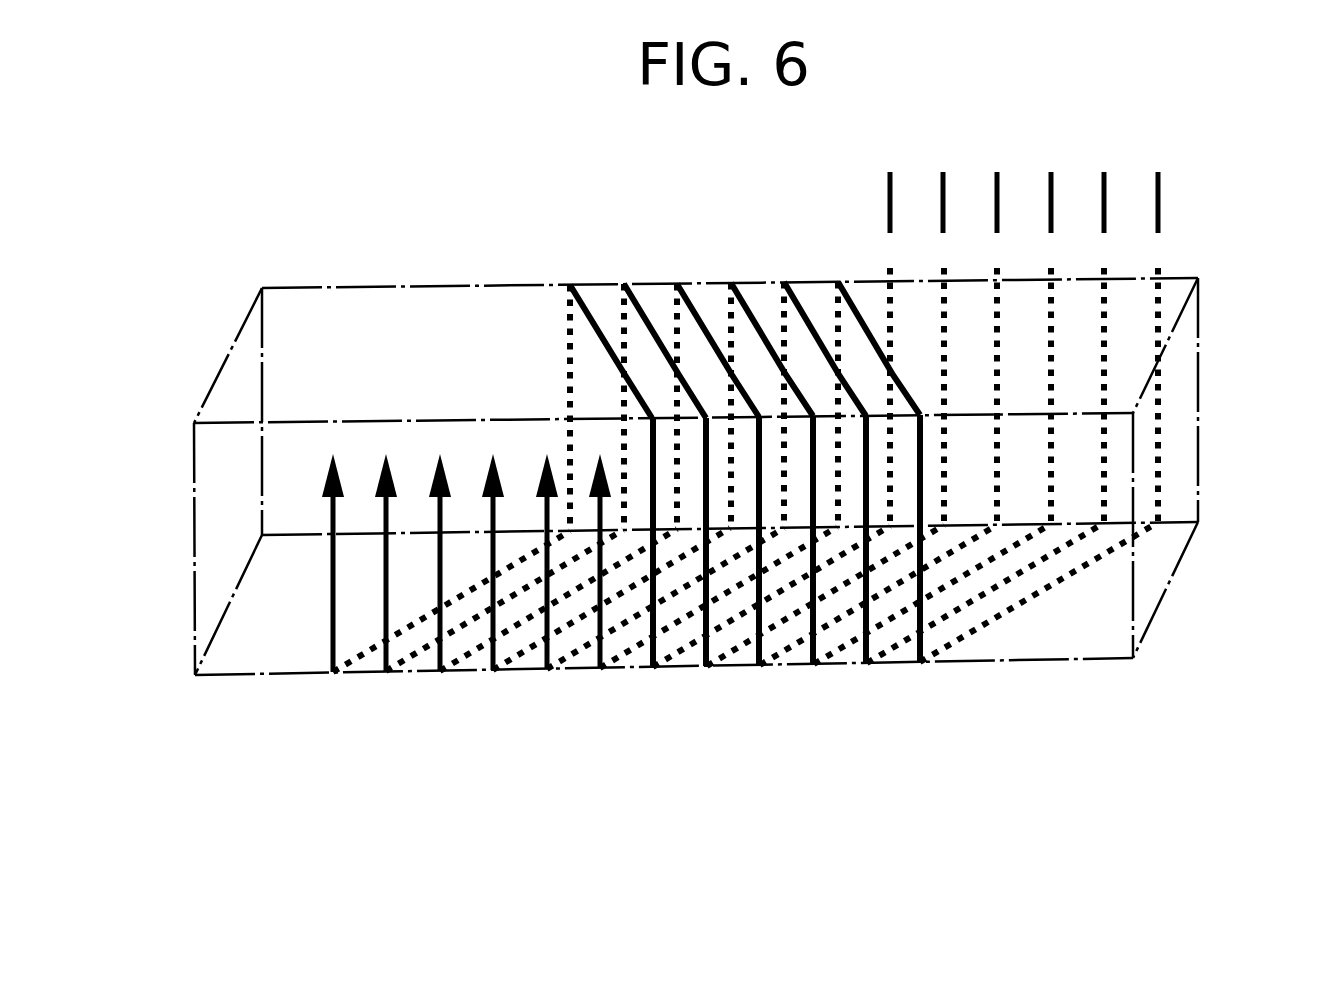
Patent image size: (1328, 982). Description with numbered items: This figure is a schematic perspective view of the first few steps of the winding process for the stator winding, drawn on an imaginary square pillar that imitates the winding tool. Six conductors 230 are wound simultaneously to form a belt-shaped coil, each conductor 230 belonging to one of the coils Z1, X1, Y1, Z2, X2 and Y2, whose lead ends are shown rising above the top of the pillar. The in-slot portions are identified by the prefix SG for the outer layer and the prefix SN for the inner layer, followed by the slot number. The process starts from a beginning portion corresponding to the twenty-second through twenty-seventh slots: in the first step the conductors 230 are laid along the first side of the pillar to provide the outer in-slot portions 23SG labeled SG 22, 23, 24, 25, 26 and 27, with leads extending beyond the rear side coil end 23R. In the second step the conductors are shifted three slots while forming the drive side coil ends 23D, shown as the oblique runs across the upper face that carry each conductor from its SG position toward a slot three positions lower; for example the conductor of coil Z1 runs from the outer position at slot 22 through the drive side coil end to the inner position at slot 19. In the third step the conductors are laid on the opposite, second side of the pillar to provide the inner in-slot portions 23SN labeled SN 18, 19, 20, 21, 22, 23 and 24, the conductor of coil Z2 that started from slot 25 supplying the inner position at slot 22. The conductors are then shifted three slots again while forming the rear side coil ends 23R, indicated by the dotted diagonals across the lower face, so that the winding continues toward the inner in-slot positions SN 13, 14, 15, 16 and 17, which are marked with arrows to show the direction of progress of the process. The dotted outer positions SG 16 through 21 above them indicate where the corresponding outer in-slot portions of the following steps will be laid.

The slot 13 / in-slot portion SN13 13 is at (444, 583).
The slot 14 / in-slot portion SN14 14 is at (497, 583).
The slot 15 / in-slot portion SN15 15 is at (551, 583).
The slot 16 / in-slot portions SG16, SN16 16 is at (604, 477).
The slot 17 / in-slot portions SG17, SN17 17 is at (658, 477).
The slot 18 / in-slot portions SG18, SN18 18 is at (711, 477).
The slot 19 / in-slot portions SG19, SN19 19 is at (764, 477).
The slot 20 / in-slot portions SG20, SN20 20 is at (817, 477).
The slot 21 / in-slot portions SG21, SN21 21 is at (871, 477).
The slot 22 / in-slot portions SG22, SN22 22 is at (925, 475).
The slot 23 / in-slot portions SG23, SN23 23 is at (978, 475).
The slot 24 / in-slot portions SG24, SN24 24 is at (1031, 475).
The slot 25 / in-slot portion SG25 25 is at (1051, 381).
The slot 26 / in-slot portion SG26 26 is at (1104, 380).
The slot 27 / in-slot portion SG27 27 is at (1158, 380).
The outer in-slot portion SG is at (527, 258).
The inner in-slot portion SN is at (294, 694).
The coil Z1 is at (890, 185).
The coil X1 is at (943, 185).
The coil Y1 is at (996, 185).
The coil Z2 is at (1051, 185).
The coil X2 is at (1104, 185).
The coil Y2 is at (1157, 185).
The conductor 230 is at (890, 207).
The rear side coil end 23R is at (244, 282).
The inner in-slot portions 23SN is at (176, 427).
The outer in-slot portions 23SG is at (1225, 277).
The drive side coil end 23D is at (1205, 526).